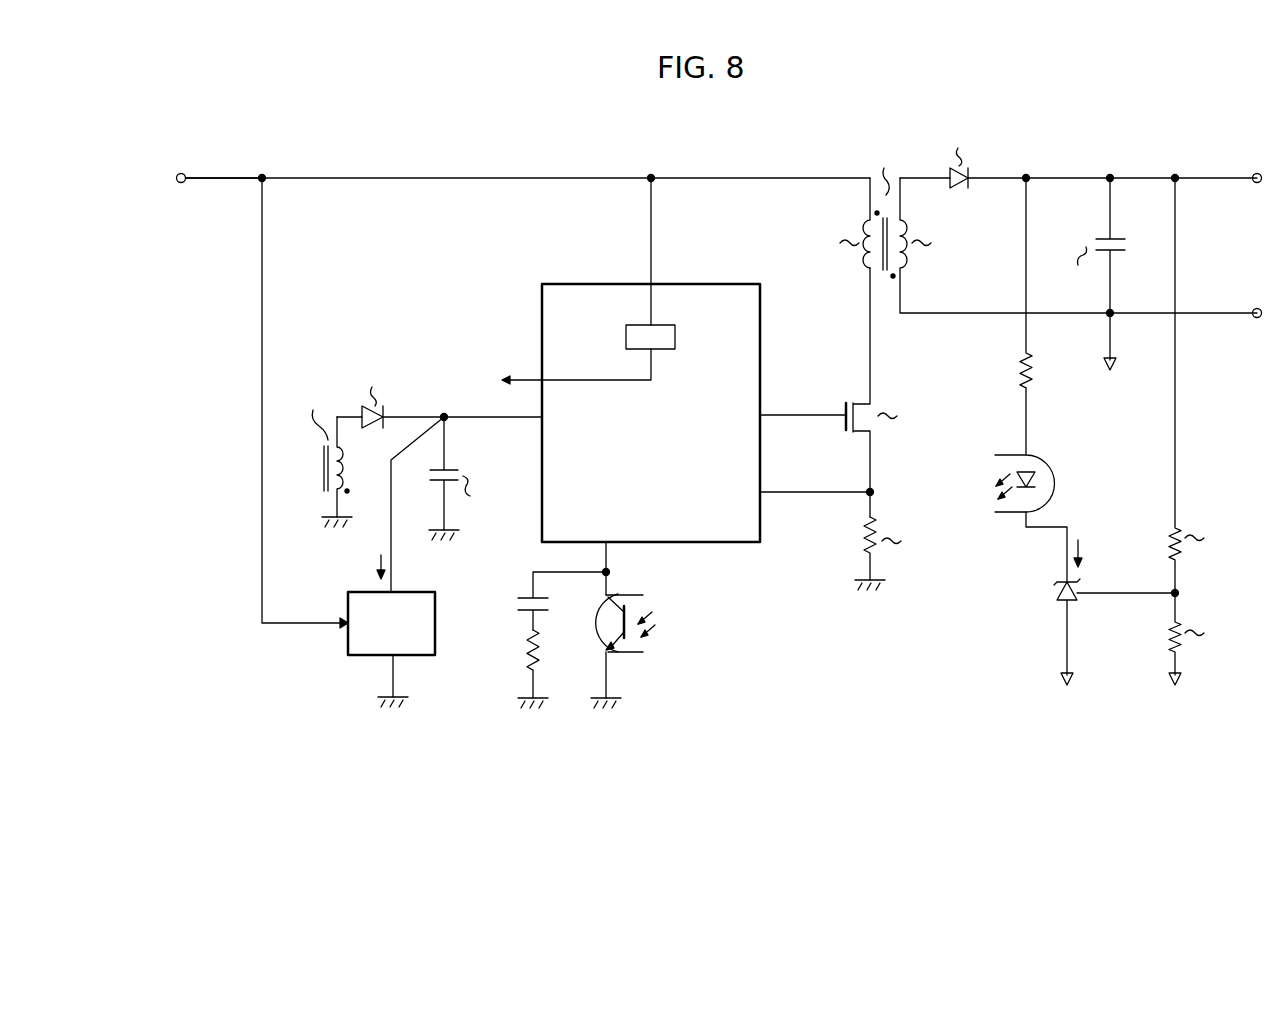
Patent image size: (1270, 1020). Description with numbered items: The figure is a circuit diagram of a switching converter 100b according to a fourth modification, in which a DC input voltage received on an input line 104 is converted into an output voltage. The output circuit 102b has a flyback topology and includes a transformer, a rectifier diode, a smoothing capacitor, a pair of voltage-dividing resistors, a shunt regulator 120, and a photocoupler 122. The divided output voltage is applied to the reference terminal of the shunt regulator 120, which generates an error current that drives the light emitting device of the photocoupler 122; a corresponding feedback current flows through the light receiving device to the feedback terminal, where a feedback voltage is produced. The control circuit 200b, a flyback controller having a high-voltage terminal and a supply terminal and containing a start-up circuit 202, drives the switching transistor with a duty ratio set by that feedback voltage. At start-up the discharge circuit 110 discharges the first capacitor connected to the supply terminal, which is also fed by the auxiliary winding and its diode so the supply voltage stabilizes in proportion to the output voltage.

The switching converter 100b is at (722, 817).
The input line 104 is at (228, 176).
The discharge circuit 110 is at (347, 642).
The control circuit 200b is at (631, 360).
The start-up circuit 202 is at (677, 339).
The photocoupler 122 is at (637, 654).
The shunt regulator 120 is at (1050, 593).
The output circuit 102b is at (1207, 710).